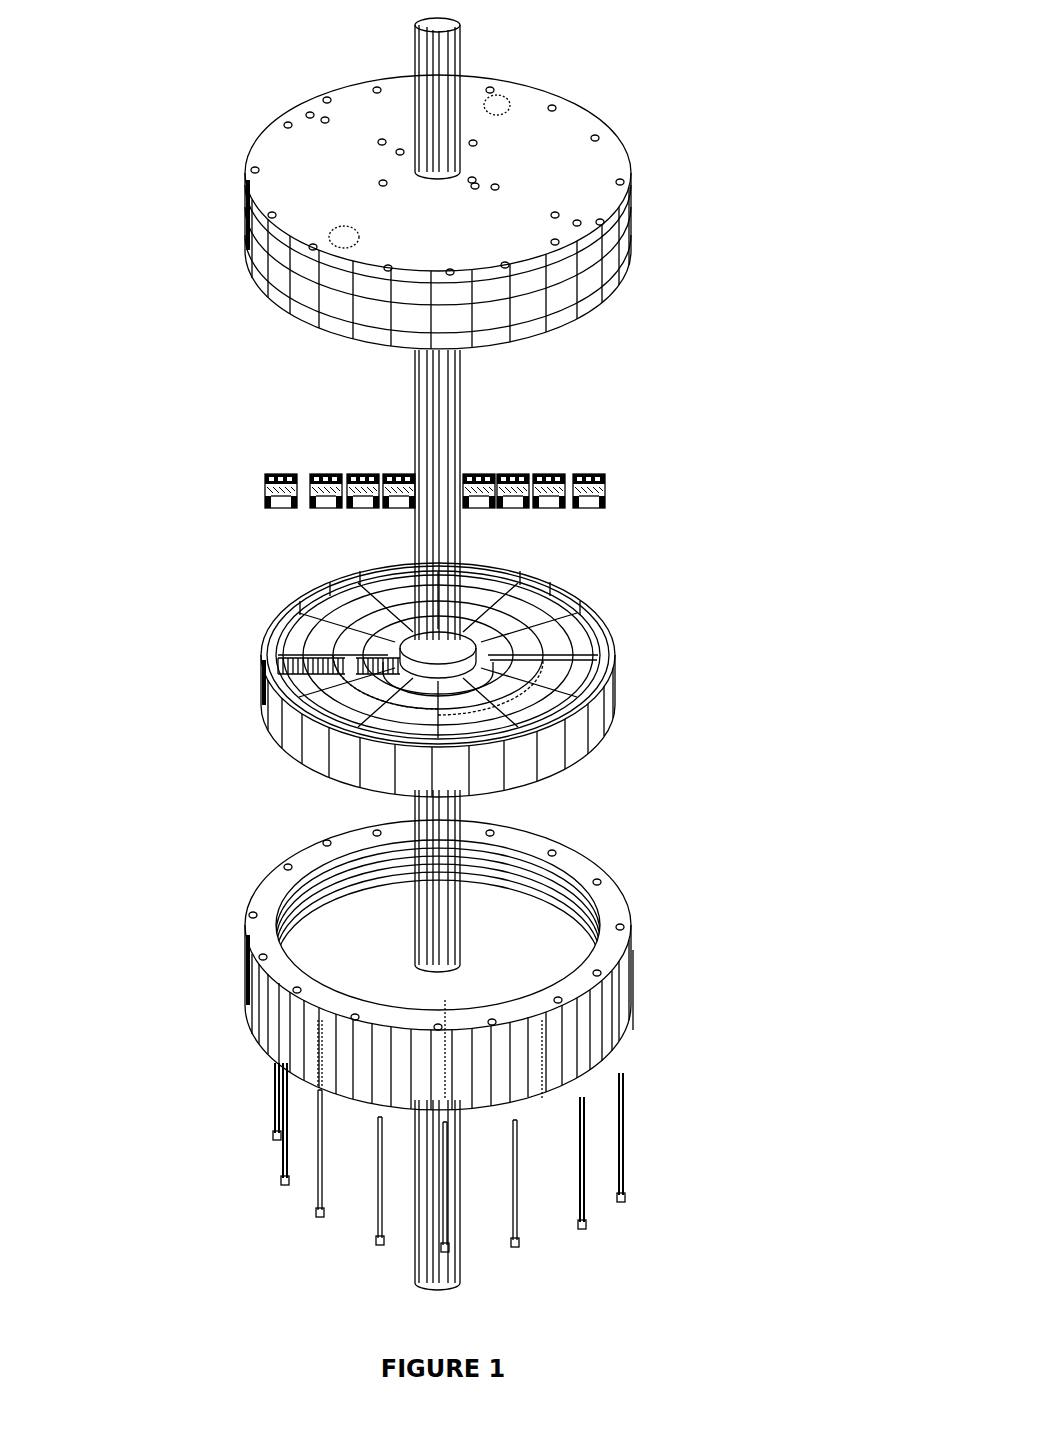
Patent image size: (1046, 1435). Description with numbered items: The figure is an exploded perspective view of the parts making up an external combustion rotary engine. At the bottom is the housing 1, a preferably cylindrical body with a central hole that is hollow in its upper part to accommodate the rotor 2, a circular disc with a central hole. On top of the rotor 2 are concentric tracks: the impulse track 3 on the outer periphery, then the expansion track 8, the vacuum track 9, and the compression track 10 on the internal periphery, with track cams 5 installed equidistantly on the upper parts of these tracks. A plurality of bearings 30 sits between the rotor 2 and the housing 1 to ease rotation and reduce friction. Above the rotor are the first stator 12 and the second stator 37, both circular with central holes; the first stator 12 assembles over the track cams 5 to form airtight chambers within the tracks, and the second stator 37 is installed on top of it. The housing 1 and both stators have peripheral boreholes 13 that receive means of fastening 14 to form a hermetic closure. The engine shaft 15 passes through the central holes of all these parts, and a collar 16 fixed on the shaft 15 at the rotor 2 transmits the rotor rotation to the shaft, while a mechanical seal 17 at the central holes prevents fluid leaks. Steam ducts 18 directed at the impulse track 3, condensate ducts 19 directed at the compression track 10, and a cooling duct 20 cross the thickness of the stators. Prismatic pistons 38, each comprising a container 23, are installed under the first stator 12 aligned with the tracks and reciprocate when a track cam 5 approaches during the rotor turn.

The housing 1 is at (625, 975).
The rotor 2 is at (607, 650).
The impulse track 3 is at (417, 737).
The track cams 5 is at (330, 683).
The expansion track 8 is at (540, 703).
The vacuum track 9 is at (487, 623).
The compression track 10 is at (307, 762).
The first stator 12 is at (486, 342).
The boreholes 13 is at (565, 100).
The means of fastening 14 is at (621, 1201).
The engine shaft 15 is at (453, 58).
The collar 16 is at (427, 650).
The mechanical seal 17 is at (405, 165).
The steam ducts 18 is at (506, 103).
The condensate ducts 19 is at (495, 187).
The cooling duct 20 is at (382, 142).
The container 23 is at (305, 500).
The bearings 30 is at (297, 877).
The second stator 37 is at (552, 300).
The piston 38 is at (362, 472).